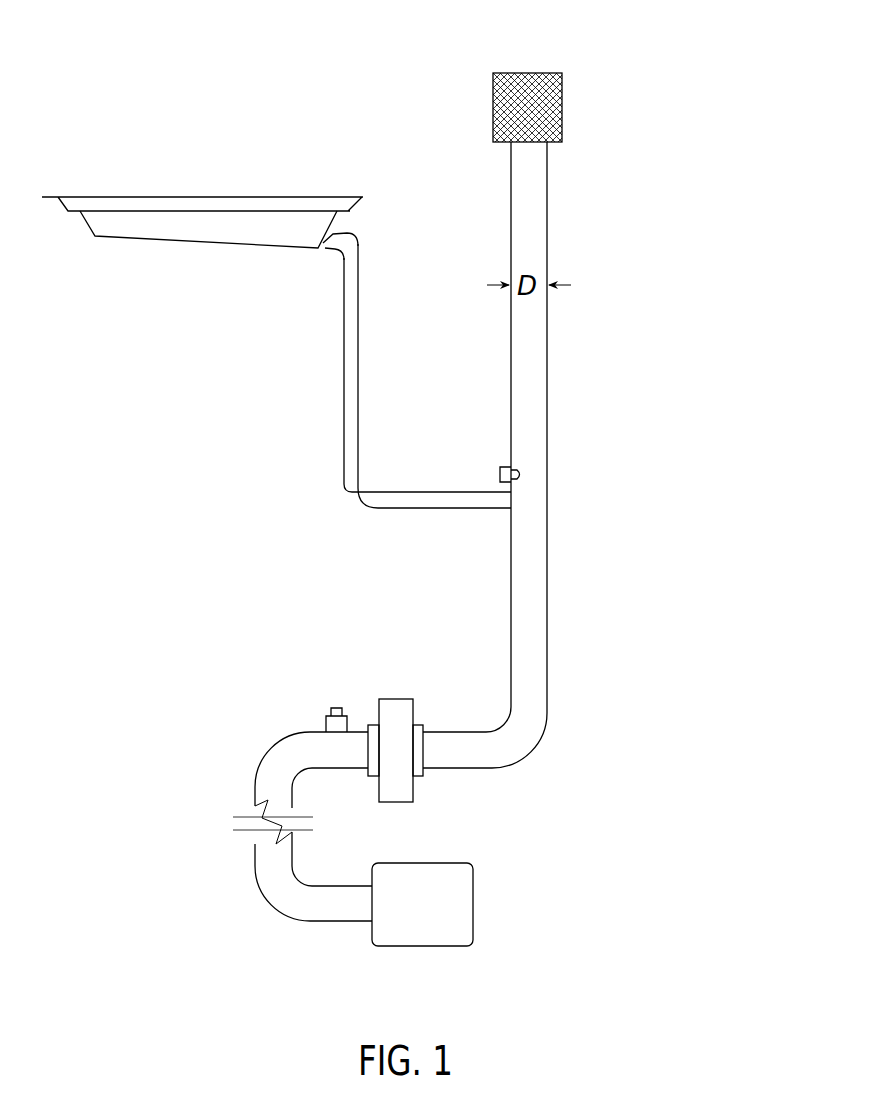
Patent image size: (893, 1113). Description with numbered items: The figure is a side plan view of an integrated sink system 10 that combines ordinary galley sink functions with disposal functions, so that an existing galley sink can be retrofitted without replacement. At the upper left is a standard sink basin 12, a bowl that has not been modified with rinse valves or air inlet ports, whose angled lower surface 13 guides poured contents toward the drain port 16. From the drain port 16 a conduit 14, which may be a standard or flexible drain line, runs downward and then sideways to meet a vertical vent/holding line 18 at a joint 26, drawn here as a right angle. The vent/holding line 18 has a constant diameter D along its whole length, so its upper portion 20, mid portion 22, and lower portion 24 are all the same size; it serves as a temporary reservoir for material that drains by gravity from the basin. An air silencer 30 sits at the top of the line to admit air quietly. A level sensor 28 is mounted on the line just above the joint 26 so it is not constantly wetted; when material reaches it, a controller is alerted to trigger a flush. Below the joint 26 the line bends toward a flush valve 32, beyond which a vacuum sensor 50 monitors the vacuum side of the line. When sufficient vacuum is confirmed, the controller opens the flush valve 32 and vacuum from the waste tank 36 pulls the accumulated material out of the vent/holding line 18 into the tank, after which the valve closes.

The integrated sink system 10 is at (672, 98).
The standard sink basin 12 is at (98, 222).
The angled lower surface 13 is at (210, 243).
The conduit 14 is at (350, 372).
The drain port 16 is at (327, 248).
The vent/holding line 18 is at (506, 218).
The upper portion 20 is at (570, 185).
The mid portion 22 is at (570, 484).
The lower portion 24 is at (572, 748).
The joint 26 is at (505, 508).
The level sensor 28 is at (500, 470).
The air silencer 30 is at (503, 127).
The flush valve 32 is at (400, 790).
The vacuum waste tank 36 is at (438, 916).
The vacuum sensor 50 is at (326, 720).